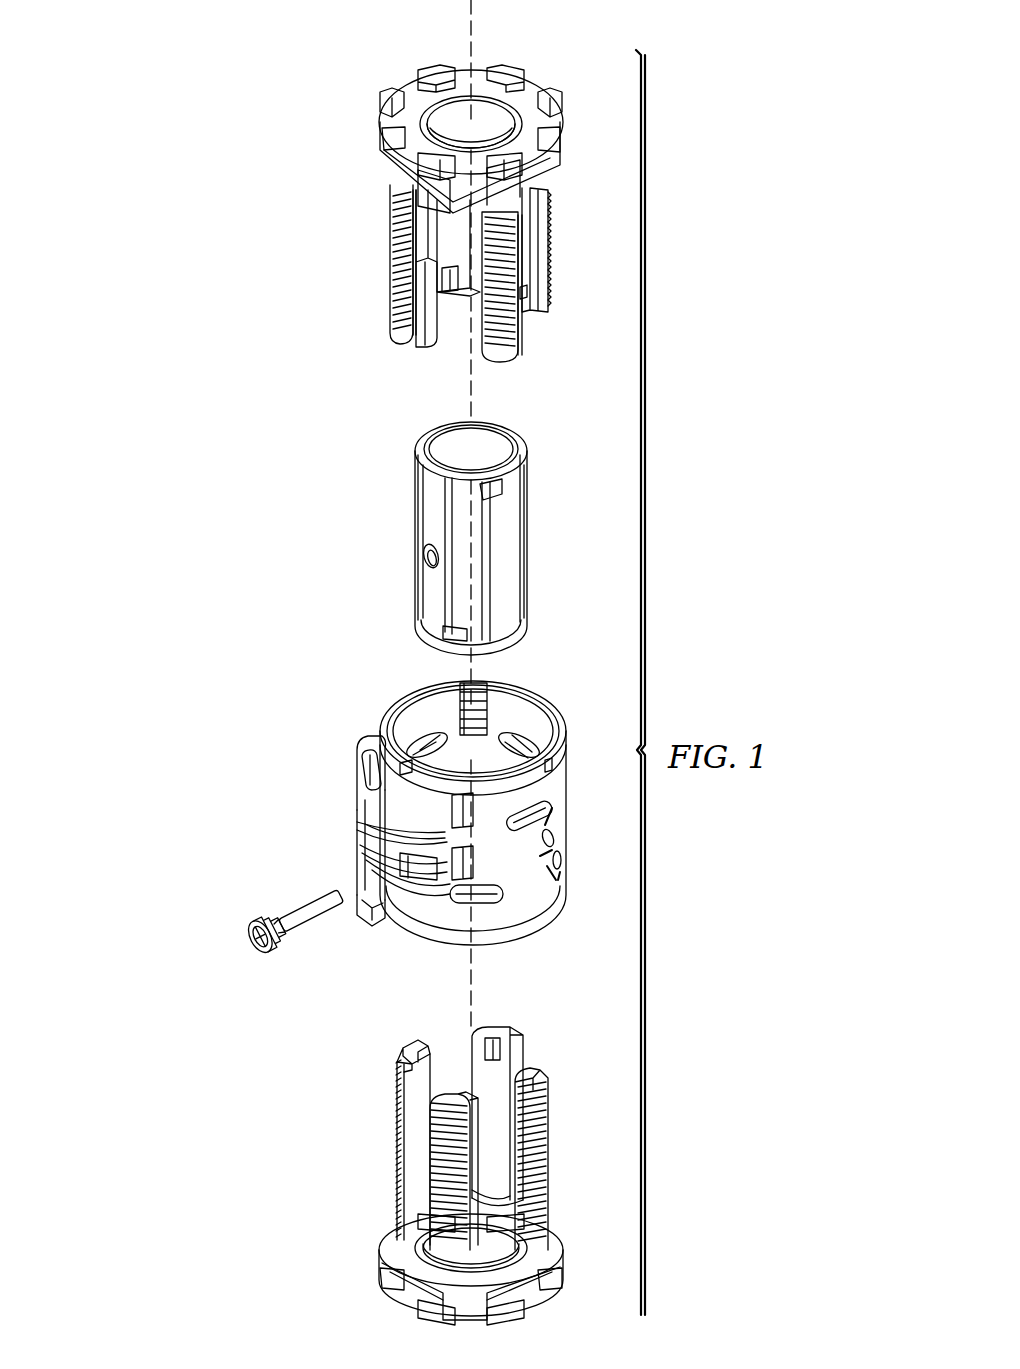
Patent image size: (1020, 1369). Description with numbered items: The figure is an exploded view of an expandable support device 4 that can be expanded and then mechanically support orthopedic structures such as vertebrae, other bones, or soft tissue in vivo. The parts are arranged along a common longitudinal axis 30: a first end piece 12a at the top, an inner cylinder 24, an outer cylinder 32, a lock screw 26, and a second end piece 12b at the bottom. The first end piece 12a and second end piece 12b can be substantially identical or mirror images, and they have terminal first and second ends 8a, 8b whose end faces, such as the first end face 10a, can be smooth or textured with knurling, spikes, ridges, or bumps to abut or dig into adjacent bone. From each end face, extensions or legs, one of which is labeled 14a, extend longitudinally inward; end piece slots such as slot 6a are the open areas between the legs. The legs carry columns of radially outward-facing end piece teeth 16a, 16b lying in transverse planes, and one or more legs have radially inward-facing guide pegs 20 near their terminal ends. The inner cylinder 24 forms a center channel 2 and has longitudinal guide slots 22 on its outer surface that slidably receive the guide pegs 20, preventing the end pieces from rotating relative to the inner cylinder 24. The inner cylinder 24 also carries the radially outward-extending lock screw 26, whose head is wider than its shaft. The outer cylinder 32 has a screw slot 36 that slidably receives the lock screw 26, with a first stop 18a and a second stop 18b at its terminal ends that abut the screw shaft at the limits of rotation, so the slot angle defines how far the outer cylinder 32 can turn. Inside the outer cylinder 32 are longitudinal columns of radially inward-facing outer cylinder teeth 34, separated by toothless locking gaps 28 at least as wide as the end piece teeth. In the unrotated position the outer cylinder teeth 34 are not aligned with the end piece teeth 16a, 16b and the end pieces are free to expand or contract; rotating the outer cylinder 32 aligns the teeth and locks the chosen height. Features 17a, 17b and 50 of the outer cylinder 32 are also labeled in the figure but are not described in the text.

The center channel 2 is at (493, 435).
The expandable support device 4 is at (122, 541).
The end piece slot 6a is at (429, 322).
The terminal first end 8a is at (396, 96).
The terminal second end 8b is at (392, 1286).
The first end face 10a is at (528, 94).
The first end piece 12a is at (345, 180).
The second end piece 12b is at (355, 1189).
The threaded leg 14a is at (410, 242).
The end piece teeth 16a is at (512, 322).
The end piece teeth 16b is at (548, 1146).
The latch tab 17a is at (360, 742).
The latch tab 17b is at (372, 914).
The first stop 18a is at (435, 872).
The second stop 18b is at (360, 850).
The guide peg 20 is at (450, 292).
The guide slot 22 is at (497, 548).
The inner cylinder 24 is at (385, 511).
The lock screw 26 is at (268, 902).
The locking gap 28 is at (427, 703).
The longitudinal axis 30 is at (479, 52).
The outer cylinder 32 is at (325, 784).
The outer cylinder teeth 34 is at (490, 708).
The screw slot 36 is at (404, 862).
The slot 50 is at (447, 868).